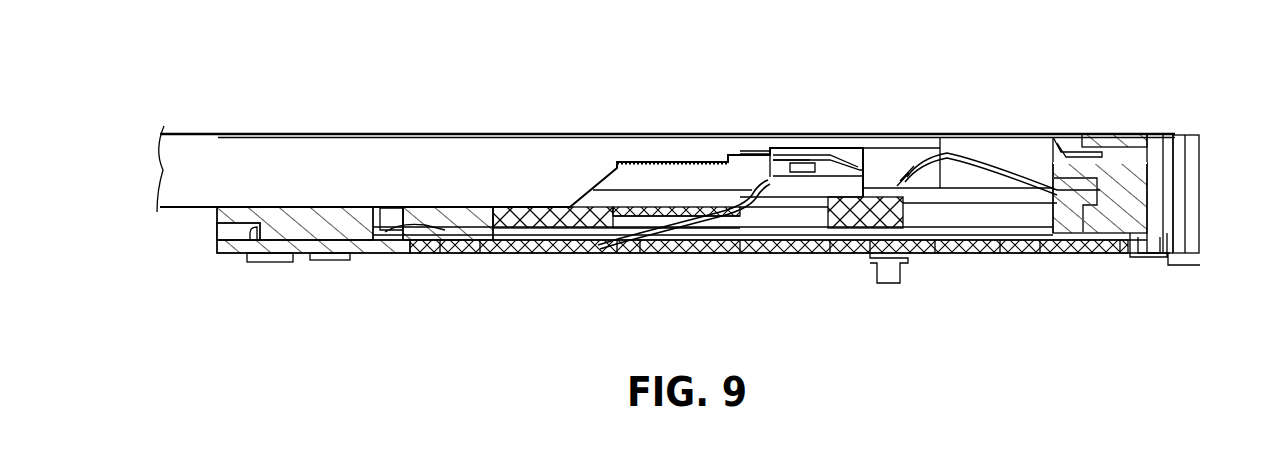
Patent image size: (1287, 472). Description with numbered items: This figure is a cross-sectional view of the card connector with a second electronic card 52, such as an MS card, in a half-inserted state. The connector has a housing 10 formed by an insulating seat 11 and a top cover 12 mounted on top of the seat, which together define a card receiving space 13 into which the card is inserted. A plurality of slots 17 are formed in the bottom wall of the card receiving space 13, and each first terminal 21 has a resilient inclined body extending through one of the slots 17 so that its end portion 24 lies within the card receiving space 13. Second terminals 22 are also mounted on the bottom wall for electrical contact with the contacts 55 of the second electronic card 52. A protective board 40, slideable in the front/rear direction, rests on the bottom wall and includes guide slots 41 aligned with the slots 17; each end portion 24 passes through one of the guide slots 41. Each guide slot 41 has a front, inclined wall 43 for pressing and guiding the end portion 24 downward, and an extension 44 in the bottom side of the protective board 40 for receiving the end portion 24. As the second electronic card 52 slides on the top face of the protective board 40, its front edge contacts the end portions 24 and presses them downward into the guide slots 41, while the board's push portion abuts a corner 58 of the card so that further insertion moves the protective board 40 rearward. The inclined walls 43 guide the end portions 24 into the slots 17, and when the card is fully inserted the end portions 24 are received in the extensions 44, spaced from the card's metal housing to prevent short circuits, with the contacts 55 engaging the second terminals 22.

The housing 10 is at (1103, 131).
The insulating seat 11 is at (1150, 195).
The top cover 12 is at (580, 150).
The card receiving space 13 is at (903, 138).
The slot 17 is at (835, 240).
The first terminal 21 is at (715, 225).
The second terminal 22 is at (960, 155).
The end portion 24 is at (785, 155).
The protective board 40 is at (545, 222).
The guide slot 41 is at (780, 218).
The front, inclined wall 43 is at (690, 230).
The extension 44 is at (657, 218).
The second electronic card 52 is at (420, 168).
The contact 55 is at (672, 158).
The corner 58 is at (748, 160).